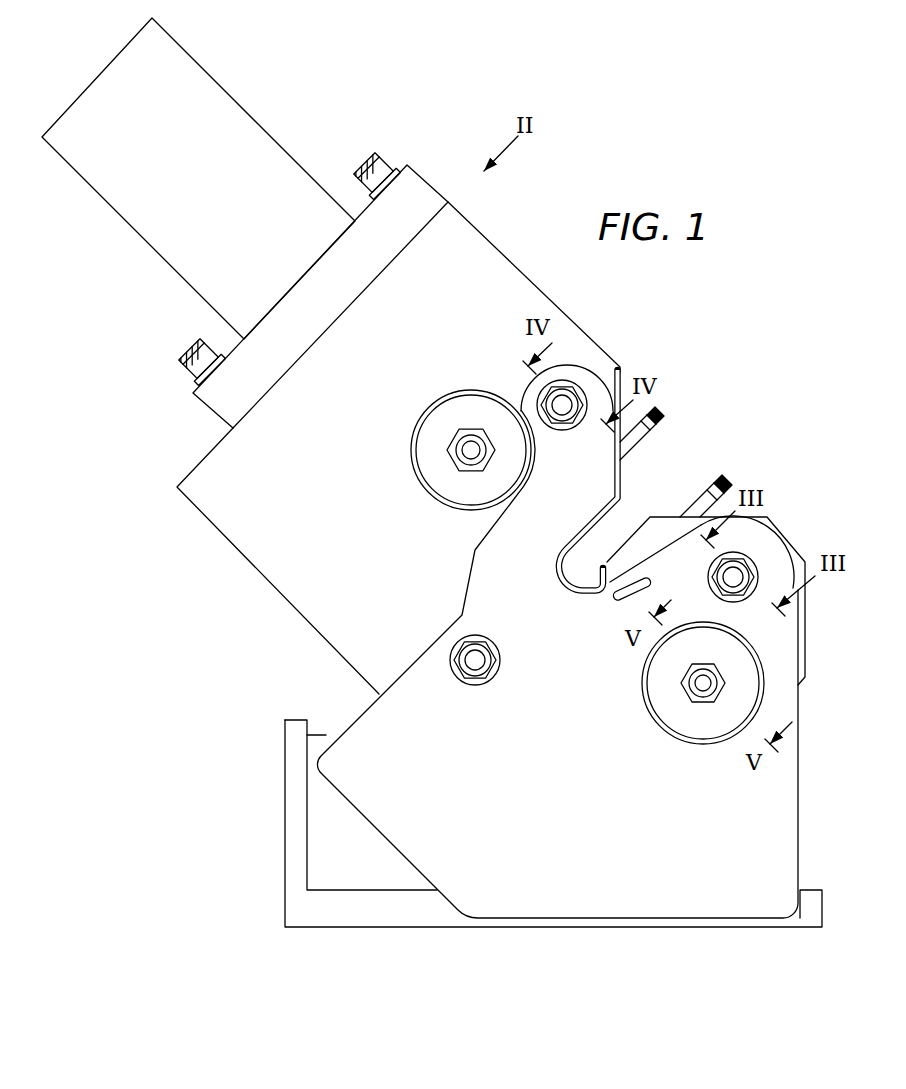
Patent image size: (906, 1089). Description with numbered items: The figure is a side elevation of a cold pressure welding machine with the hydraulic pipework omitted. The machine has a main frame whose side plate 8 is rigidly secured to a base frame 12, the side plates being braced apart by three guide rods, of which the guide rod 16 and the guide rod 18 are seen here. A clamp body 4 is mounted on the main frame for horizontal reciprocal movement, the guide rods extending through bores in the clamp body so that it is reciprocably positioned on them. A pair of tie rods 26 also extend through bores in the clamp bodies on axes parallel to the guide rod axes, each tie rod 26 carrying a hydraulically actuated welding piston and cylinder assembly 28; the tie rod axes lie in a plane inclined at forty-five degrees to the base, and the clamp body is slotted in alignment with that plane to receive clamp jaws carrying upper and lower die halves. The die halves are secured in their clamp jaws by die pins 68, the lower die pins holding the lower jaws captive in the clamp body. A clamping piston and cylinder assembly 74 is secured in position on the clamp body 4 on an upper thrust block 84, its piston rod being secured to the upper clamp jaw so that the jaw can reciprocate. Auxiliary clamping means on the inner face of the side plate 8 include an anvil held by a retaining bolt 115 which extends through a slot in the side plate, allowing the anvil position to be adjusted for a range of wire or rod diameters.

The clamping piston and cylinder assembly 74 is at (178, 158).
The upper thrust block 84 is at (418, 200).
The clamp body 4 is at (334, 508).
The welding piston and cylinder assembly 28 is at (441, 398).
The tie rod 26 is at (471, 445).
The guide rod 18 is at (578, 392).
The die pin 68 is at (714, 479).
The side plate 8 is at (529, 853).
The guide rod 16 is at (470, 660).
The retaining bolt 115 is at (622, 599).
The base frame 12 is at (292, 830).